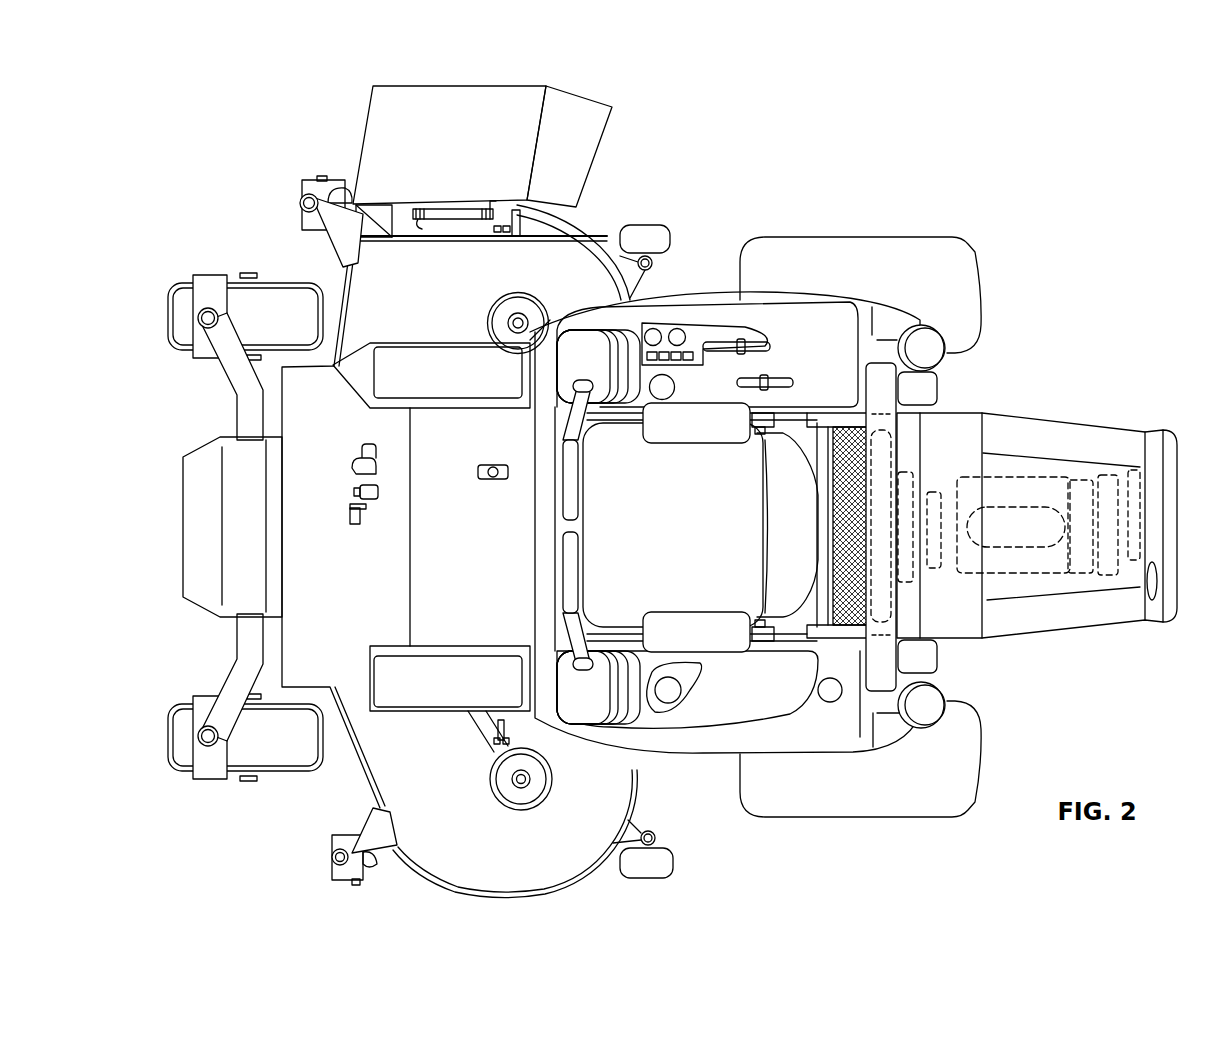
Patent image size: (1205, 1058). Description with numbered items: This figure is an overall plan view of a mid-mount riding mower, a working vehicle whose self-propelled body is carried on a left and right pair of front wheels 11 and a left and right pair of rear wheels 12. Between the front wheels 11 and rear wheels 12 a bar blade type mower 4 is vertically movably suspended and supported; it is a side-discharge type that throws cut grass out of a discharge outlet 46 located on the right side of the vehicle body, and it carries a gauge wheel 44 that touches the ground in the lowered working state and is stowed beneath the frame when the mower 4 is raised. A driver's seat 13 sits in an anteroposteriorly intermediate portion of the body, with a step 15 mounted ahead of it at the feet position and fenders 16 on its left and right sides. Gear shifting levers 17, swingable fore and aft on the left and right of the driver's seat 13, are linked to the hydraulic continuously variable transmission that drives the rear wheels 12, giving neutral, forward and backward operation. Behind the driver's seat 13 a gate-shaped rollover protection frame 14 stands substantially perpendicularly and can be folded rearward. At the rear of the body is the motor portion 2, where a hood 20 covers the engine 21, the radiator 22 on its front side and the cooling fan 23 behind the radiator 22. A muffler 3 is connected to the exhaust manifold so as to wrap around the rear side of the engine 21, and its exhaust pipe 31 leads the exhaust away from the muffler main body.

The motor portion 2 is at (1106, 420).
The muffler 3 is at (1146, 503).
The mower 4 is at (333, 788).
The front wheels 11 is at (168, 310).
The rear wheels 12 is at (855, 248).
The driver's seat 13 is at (715, 595).
The rollover protection frame 14 is at (880, 415).
The step 15 is at (316, 574).
The fenders 16 is at (705, 308).
The gear shifting levers 17 is at (560, 548).
The hood 20 is at (1007, 425).
The engine 21 is at (1052, 470).
The radiator 22 is at (925, 615).
The cooling fan 23 is at (920, 480).
The exhaust pipe 31 is at (1122, 598).
The gauge wheel 44 is at (300, 200).
The discharge outlet 46 is at (400, 188).